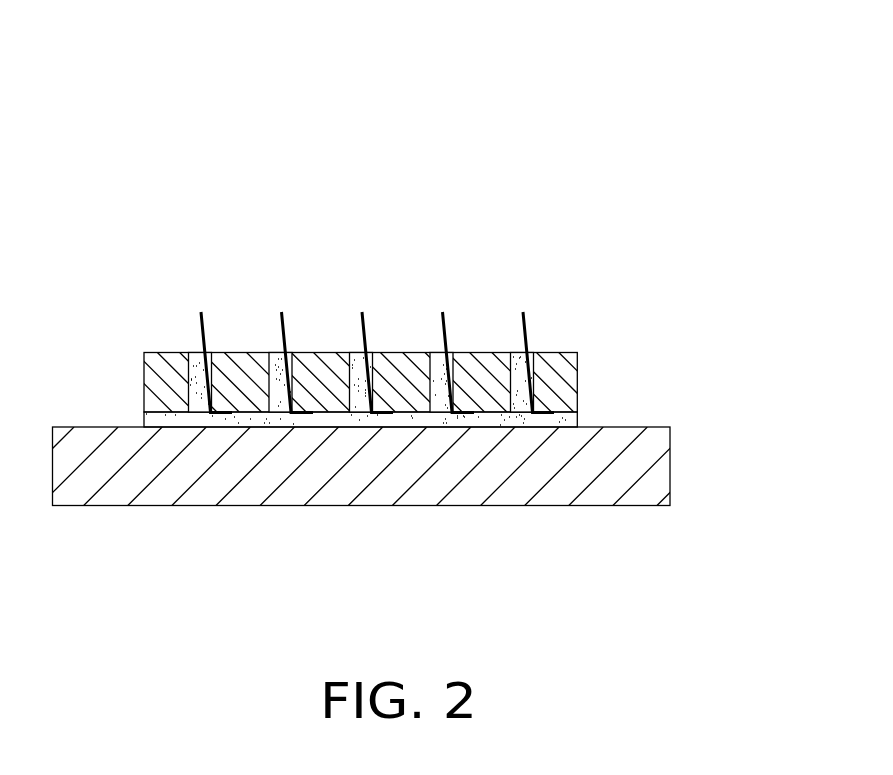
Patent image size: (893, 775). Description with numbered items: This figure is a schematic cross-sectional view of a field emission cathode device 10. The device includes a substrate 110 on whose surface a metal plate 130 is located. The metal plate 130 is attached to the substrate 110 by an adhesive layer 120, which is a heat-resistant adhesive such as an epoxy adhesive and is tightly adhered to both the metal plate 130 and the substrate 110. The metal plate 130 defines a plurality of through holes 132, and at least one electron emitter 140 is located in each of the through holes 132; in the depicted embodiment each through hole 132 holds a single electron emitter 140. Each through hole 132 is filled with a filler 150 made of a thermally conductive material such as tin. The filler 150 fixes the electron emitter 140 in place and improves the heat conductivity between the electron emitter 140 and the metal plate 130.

The field emission cathode device 10 is at (323, 73).
The substrate 110 is at (642, 467).
The adhesive layer 120 is at (553, 419).
The metal plate 130 is at (557, 388).
The through holes 132 is at (197, 353).
The electron emitters 140 is at (527, 318).
The filler 150 is at (193, 398).